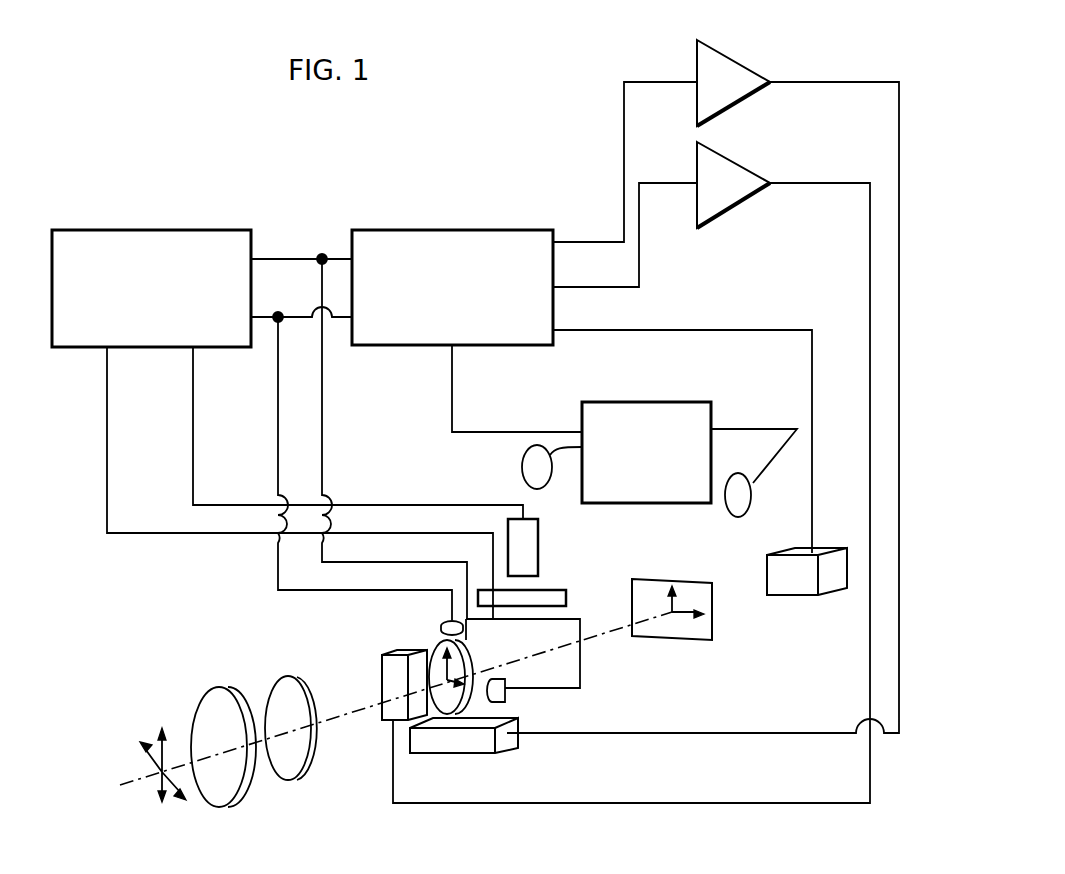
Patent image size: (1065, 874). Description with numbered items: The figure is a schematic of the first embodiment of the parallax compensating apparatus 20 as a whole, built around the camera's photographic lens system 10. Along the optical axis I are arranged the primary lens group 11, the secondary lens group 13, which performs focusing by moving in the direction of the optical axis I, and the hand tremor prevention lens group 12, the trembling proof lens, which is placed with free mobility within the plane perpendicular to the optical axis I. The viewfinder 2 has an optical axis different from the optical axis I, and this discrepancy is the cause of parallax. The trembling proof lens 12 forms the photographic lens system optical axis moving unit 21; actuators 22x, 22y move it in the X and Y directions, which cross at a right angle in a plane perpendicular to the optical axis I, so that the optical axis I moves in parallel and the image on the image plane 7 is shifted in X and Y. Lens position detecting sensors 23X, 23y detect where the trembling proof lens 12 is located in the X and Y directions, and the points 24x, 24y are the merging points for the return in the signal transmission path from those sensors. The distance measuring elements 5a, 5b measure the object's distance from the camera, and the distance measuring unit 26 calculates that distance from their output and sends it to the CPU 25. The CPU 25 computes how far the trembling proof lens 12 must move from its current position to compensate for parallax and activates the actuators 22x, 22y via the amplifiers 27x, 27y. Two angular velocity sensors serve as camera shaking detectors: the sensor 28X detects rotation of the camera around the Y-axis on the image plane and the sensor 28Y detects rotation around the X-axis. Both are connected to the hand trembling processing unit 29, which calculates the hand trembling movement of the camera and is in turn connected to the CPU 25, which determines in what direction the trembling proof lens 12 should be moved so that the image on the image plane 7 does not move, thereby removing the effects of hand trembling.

The hand trembling processing unit 29 is at (167, 230).
The CPU 25 is at (447, 230).
The merging point 24x is at (322, 259).
The merging point 24y is at (278, 317).
The amplifier 27x is at (740, 63).
The amplifier 27y is at (728, 202).
The distance measuring unit 26 is at (633, 503).
The distance measuring element 5a is at (530, 463).
The distance measuring element 5b is at (740, 497).
The angular velocity sensor 28X is at (527, 535).
The angular velocity sensor 28Y is at (545, 592).
The viewfinder 2 is at (785, 583).
The image plane 7 is at (675, 638).
The optical axis I is at (134, 783).
The primary lens group 11 is at (223, 692).
The secondary lens group 13 is at (302, 678).
The photographic lens system 10 is at (310, 787).
The actuator 22y is at (390, 682).
The actuator 22x is at (457, 742).
The hand tremor prevention lens group 12 is at (463, 655).
The lens position detecting sensor 23y is at (440, 630).
The lens position detecting sensor 23X is at (506, 700).
The photographic lens system optical axis moving unit 21 is at (518, 714).
The parallax compensating apparatus 20 is at (630, 687).